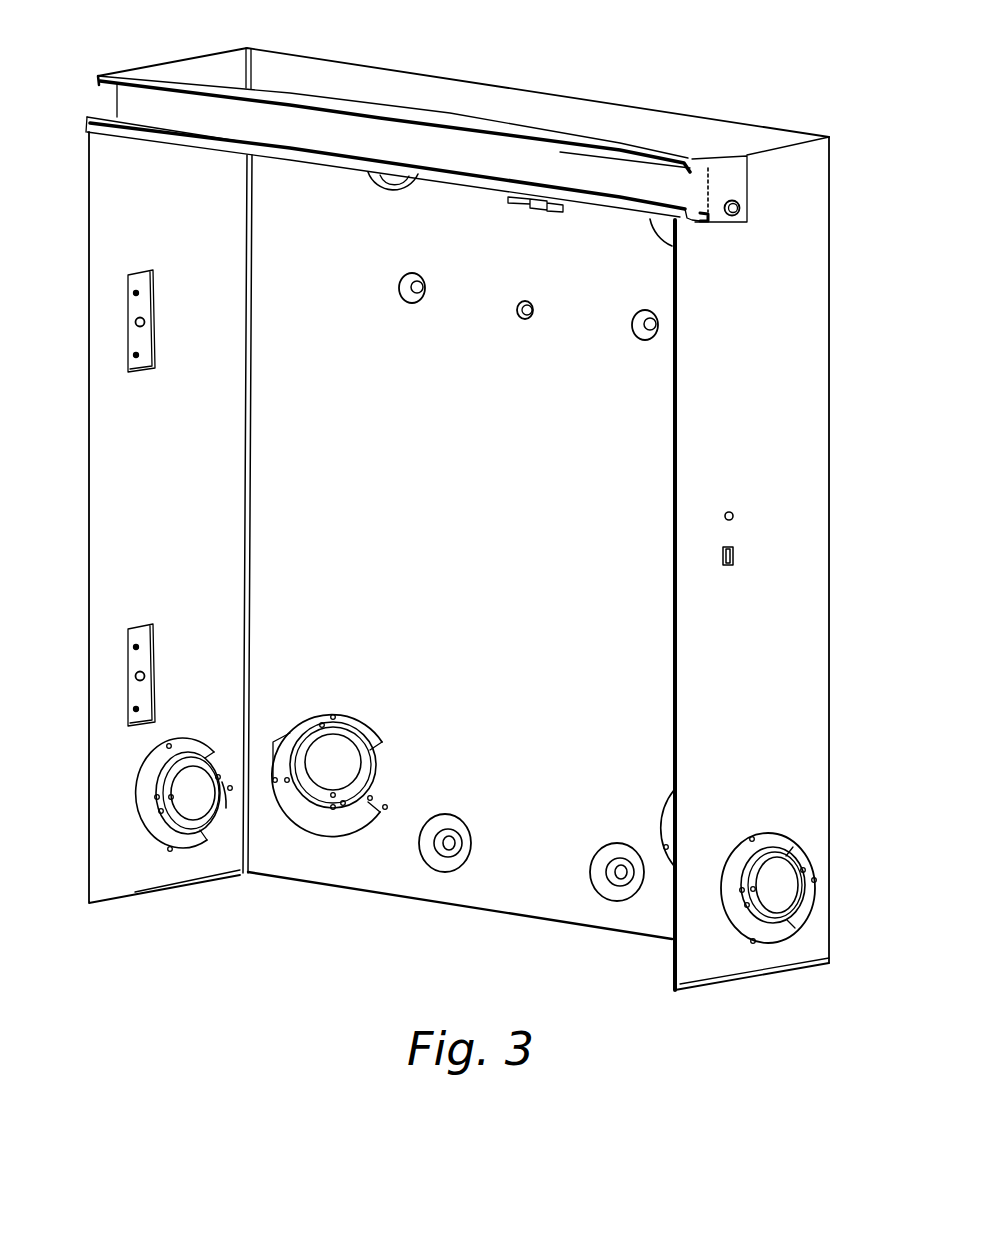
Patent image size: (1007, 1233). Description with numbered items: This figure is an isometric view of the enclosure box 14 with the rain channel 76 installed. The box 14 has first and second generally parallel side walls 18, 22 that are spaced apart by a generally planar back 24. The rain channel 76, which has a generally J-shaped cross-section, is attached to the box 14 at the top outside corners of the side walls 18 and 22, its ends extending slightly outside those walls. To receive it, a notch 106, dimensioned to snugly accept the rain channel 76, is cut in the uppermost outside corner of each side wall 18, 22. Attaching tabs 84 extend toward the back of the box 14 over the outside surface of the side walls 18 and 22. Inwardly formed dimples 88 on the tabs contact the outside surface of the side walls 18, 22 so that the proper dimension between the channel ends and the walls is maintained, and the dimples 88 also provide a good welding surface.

The box 14 is at (834, 333).
The first side wall 18 is at (768, 443).
The second side wall 22 is at (180, 486).
The back 24 is at (475, 541).
The rain channel 76 is at (440, 122).
The attaching tabs 84 is at (733, 176).
The inwardly formed dimples 88 is at (747, 222).
The notch 106 is at (113, 137).